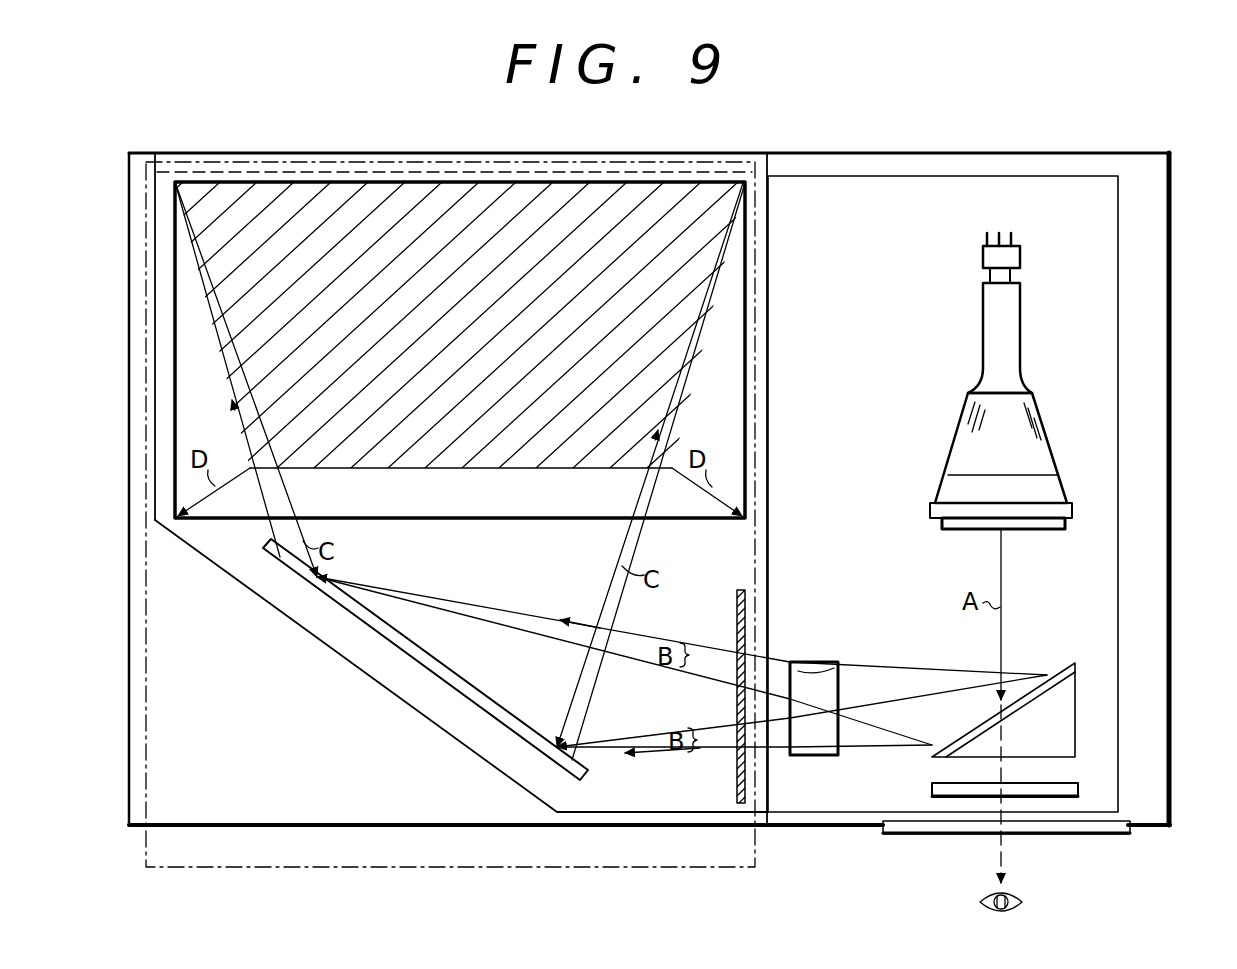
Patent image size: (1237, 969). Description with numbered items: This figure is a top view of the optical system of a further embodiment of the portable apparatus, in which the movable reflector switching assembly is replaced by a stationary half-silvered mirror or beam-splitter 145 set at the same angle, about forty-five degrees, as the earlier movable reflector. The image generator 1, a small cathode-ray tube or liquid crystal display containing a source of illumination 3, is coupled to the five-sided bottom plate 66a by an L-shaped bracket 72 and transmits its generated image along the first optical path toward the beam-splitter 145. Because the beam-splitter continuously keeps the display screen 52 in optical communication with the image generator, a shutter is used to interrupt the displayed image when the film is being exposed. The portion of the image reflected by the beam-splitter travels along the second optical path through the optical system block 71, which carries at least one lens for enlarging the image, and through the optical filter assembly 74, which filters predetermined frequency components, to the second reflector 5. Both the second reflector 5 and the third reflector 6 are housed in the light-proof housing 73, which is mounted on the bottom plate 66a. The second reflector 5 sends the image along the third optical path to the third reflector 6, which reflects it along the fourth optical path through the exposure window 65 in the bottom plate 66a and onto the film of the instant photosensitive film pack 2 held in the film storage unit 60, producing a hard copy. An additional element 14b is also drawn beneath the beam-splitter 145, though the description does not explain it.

The film storage unit 60 is at (1160, 205).
The bottom plate 66a is at (1103, 250).
The instant photosensitive film pack 2 is at (179, 862).
The light-proof housing 73 is at (262, 588).
The exposure window 65 is at (722, 384).
The third reflector 6 is at (386, 185).
The second reflector 5 is at (441, 679).
The optical filter assembly 74 is at (745, 590).
The optical system block 71 is at (820, 662).
The source of illumination 3 is at (1008, 366).
The image generator 1 is at (1045, 493).
The L-shaped bracket 72 is at (935, 508).
The half-silvered mirror or beam-splitter 145 is at (1065, 713).
The light valve panel 14b is at (1052, 795).
The display screen 52 is at (928, 832).